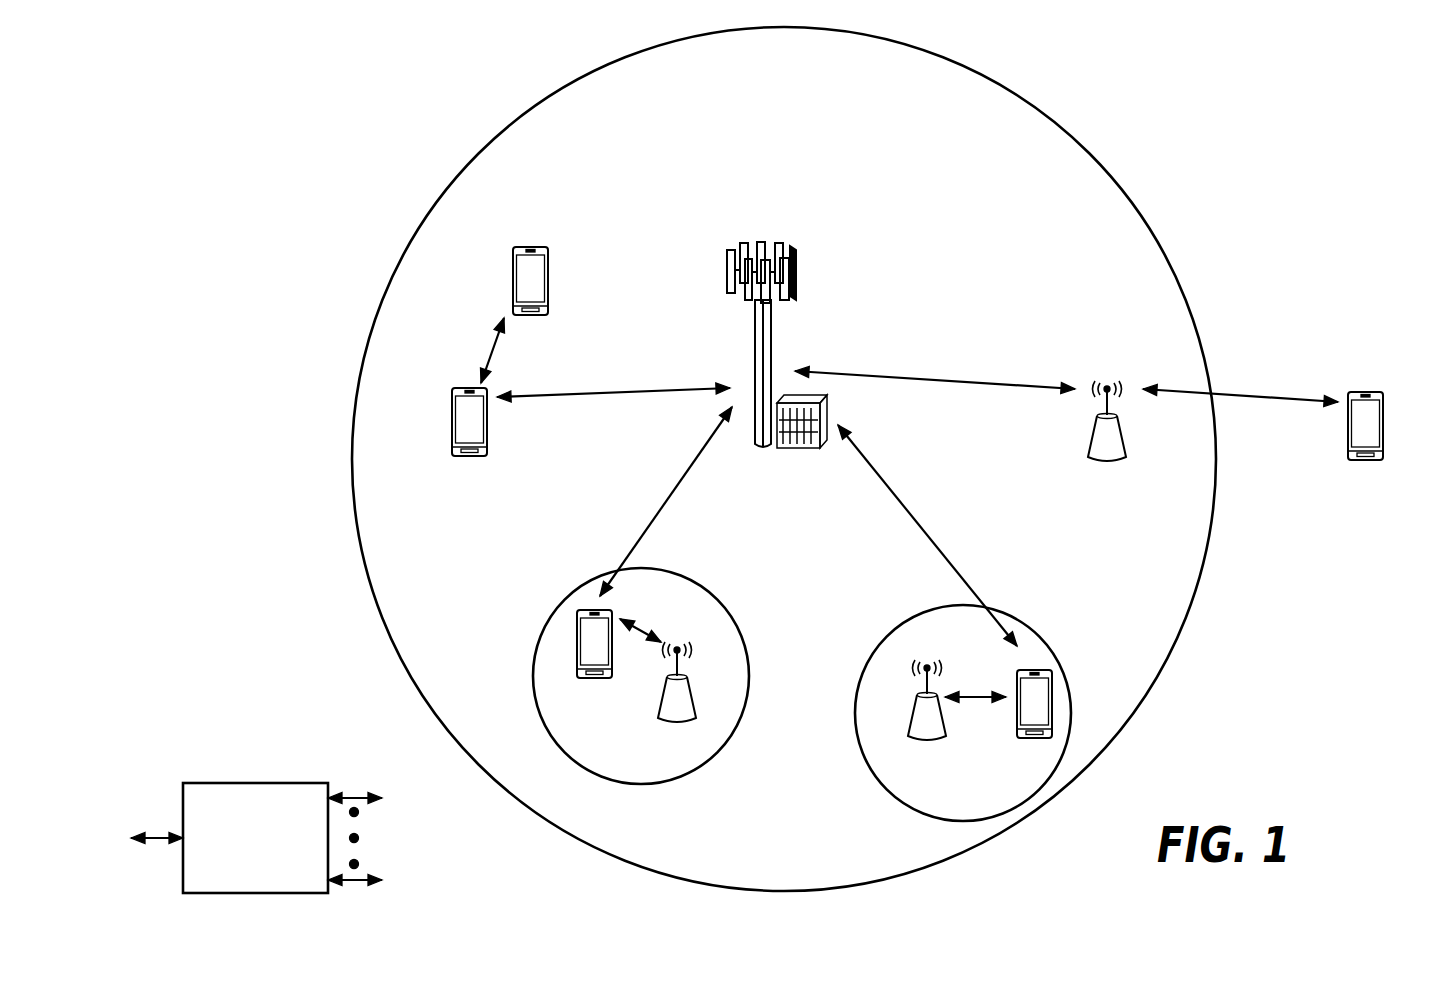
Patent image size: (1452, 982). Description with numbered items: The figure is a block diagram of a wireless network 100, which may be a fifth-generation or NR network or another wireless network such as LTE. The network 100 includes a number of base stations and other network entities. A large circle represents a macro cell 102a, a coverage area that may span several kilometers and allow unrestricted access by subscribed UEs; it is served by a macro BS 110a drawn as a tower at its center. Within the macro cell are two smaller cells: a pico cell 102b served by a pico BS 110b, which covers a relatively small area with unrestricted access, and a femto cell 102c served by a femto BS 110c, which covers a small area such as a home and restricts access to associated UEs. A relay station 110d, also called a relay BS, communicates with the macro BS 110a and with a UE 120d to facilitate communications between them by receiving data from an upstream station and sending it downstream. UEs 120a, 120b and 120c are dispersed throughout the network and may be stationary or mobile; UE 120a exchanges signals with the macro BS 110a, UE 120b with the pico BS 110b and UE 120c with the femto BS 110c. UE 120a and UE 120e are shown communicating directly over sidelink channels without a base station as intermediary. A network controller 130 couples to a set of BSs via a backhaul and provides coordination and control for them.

The wireless network 100 is at (336, 82).
The macro cell 102a is at (1079, 146).
The pico cell 102b is at (727, 608).
The femto cell 102c is at (905, 620).
The macro BS 110a is at (772, 236).
The pico BS 110b is at (697, 704).
The femto BS 110c is at (910, 734).
The relay station 110d is at (1108, 382).
The UE 120a is at (452, 422).
The UE 120b is at (578, 680).
The UE 120c is at (1018, 740).
The UE 120d is at (1380, 392).
The UE 120e is at (513, 267).
The network controller 130 is at (256, 782).